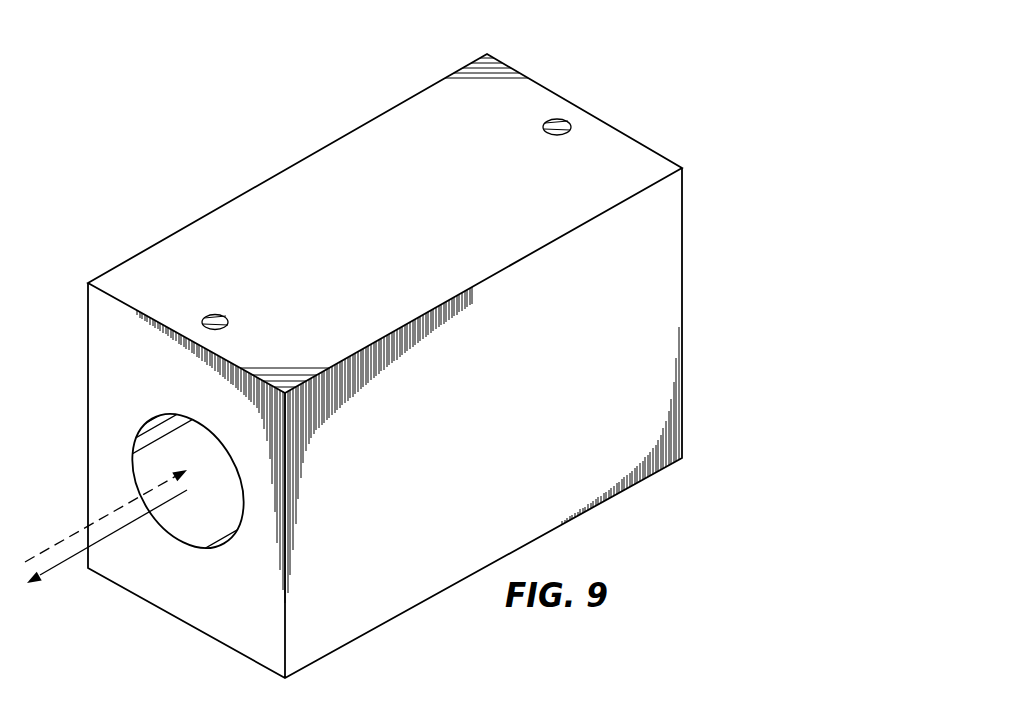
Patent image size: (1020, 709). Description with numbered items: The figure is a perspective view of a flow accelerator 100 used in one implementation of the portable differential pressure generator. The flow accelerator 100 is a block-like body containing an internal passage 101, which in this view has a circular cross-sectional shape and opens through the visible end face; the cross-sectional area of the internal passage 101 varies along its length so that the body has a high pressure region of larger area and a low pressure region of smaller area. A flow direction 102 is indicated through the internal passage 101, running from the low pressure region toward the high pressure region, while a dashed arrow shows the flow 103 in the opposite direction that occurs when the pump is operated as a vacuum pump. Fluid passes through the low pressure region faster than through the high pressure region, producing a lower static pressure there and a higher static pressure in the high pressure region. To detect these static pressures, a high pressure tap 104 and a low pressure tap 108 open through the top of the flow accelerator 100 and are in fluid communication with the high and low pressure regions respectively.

The flow accelerator 100 is at (284, 163).
The internal passage 101 is at (189, 532).
The flow direction 102 is at (62, 565).
The flow 103 is at (68, 540).
The high pressure tap 104 is at (220, 315).
The low pressure tap 108 is at (562, 118).